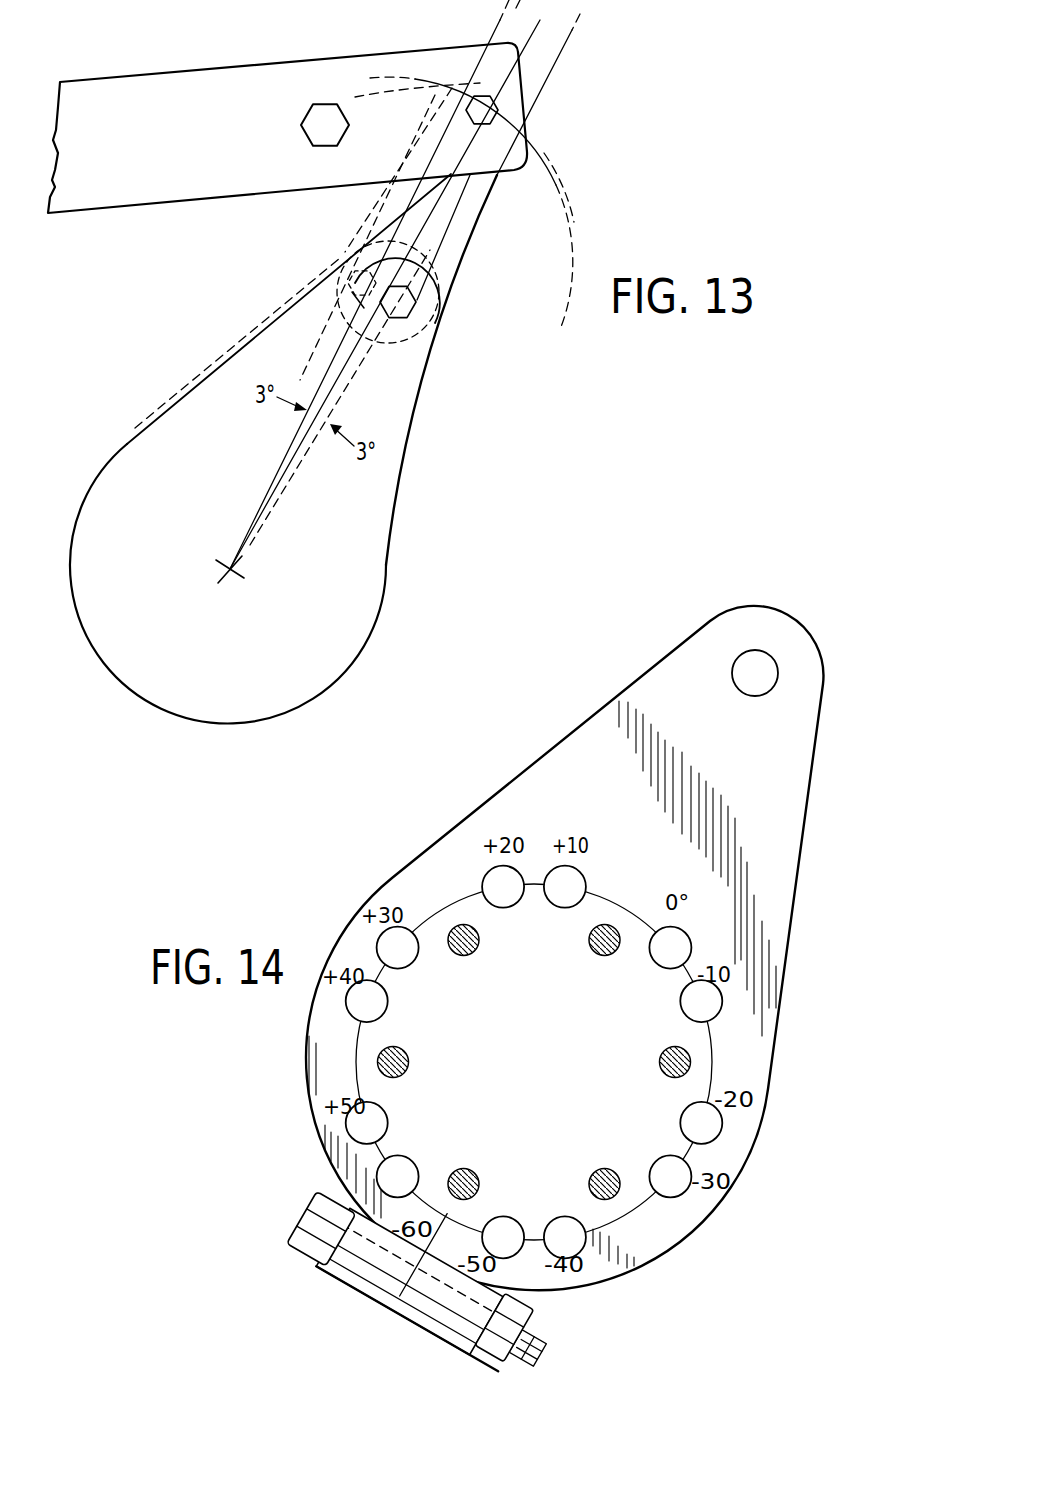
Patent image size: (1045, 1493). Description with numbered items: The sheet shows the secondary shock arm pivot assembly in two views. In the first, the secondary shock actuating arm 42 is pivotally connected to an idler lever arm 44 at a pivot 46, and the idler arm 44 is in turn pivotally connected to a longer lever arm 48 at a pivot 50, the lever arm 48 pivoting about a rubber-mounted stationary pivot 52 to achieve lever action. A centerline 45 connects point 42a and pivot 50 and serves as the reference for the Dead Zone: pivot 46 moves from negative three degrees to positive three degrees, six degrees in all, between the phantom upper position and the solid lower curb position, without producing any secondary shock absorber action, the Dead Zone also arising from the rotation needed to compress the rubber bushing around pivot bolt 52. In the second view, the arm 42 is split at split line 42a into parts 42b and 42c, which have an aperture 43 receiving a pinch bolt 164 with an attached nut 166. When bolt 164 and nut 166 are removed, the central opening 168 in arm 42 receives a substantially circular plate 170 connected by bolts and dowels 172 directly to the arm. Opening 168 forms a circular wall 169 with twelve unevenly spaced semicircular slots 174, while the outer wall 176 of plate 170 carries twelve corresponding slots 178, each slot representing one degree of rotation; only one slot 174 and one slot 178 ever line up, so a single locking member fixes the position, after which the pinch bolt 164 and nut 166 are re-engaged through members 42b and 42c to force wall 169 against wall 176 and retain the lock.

In FIG. 13, the secondary shock actuating arm 42 is at (382, 570).
In FIG. 14, the secondary shock actuating arm 42 is at (803, 760).
In FIG. 13, the split line 42a is at (231, 573).
In FIG. 14, the split line 42a is at (390, 1316).
In FIG. 14, the arm part 42b is at (370, 1268).
In FIG. 14, the arm part 42c is at (438, 1316).
In FIG. 14, the aperture 43 is at (349, 1256).
In FIG. 13, the idler lever arm 44 is at (471, 217).
In FIG. 13, the centerline 45 is at (530, 24).
In FIG. 13, the pivot 46 is at (416, 301).
In FIG. 14, the pivot 46 is at (768, 667).
In FIG. 13, the lever arm 48 is at (287, 128).
In FIG. 13, the pivot 50 is at (498, 110).
In FIG. 13, the rubber-mounted stationary pivot 52 is at (313, 118).
In FIG. 14, the pinch bolt 164 is at (312, 1218).
In FIG. 14, the nut 166 is at (522, 1302).
In FIG. 14, the central opening 168 is at (692, 1054).
In FIG. 14, the circular wall 169 is at (452, 895).
In FIG. 14, the circular plate 170 is at (544, 1021).
In FIG. 14, the bolts and dowels 172 is at (534, 1061).
In FIG. 14, the slots 174 is at (686, 947).
In FIG. 14, the outer wall 176 is at (620, 1136).
In FIG. 14, the slots 178 is at (480, 1071).